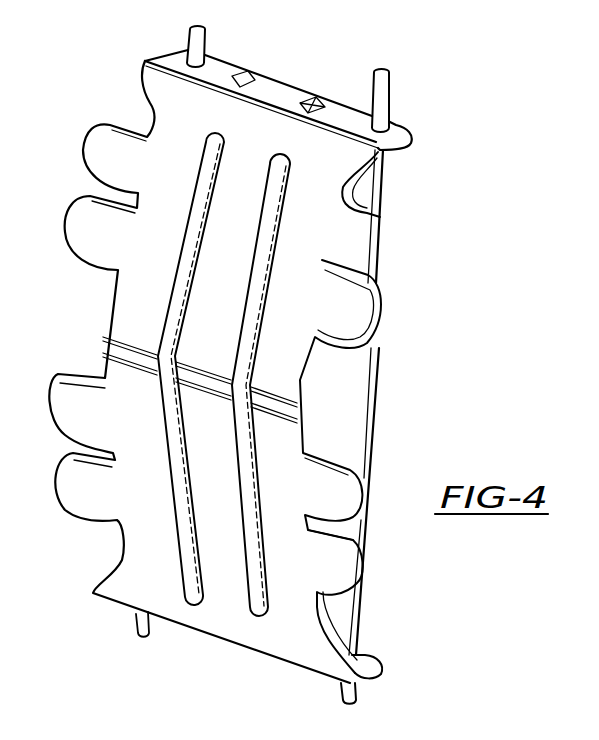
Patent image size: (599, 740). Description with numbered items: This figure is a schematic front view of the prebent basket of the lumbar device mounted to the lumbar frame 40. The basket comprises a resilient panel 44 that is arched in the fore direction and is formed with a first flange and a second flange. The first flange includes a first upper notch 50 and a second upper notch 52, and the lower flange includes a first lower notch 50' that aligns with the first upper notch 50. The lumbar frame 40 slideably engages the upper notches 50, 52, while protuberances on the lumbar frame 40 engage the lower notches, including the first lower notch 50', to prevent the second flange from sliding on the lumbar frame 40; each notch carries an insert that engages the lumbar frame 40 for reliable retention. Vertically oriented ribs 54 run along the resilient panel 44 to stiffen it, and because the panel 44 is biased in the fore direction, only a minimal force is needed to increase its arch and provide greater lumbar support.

The lumbar frame 40 is at (380, 393).
The resilient panel 44 is at (266, 149).
The first upper notch 50 is at (420, 98).
The first lower notch 50' is at (404, 659).
The second upper notch 52 is at (208, 54).
The vertically oriented ribs 54 is at (281, 228).